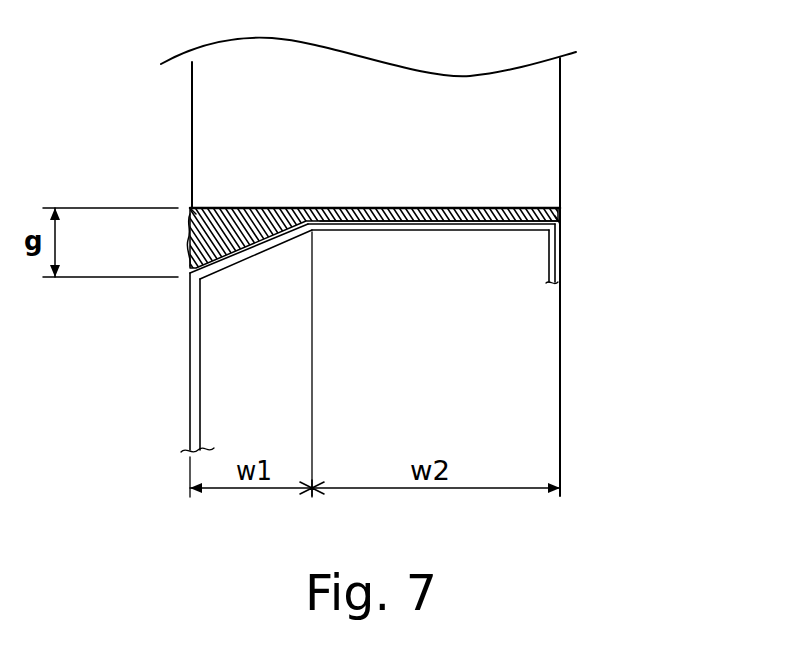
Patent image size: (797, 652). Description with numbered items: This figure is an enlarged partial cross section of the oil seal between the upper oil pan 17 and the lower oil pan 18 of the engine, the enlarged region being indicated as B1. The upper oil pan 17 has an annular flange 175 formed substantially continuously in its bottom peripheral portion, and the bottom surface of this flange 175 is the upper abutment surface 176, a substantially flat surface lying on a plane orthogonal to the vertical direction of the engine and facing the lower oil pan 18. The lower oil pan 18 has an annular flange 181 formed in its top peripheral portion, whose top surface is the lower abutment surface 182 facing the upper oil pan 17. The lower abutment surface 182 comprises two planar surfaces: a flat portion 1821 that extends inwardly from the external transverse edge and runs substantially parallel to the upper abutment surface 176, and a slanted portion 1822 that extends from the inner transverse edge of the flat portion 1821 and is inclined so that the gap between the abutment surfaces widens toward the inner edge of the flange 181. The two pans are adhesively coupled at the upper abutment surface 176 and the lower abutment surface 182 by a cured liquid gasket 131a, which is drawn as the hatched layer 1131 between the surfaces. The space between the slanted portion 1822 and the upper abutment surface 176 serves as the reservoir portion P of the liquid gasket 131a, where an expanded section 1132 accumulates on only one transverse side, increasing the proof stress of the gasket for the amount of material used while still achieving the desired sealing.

The upper oil pan 17 is at (560, 120).
The annular flange 175 is at (560, 185).
The upper abutment surface 176 is at (192, 210).
The expanded section 1132 is at (232, 208).
The adhesive layer 1131 is at (463, 208).
The liquid gasket 131a is at (190, 240).
The lower oil pan 18 is at (376, 327).
The lower abutment surface 182 is at (440, 224).
The flat portion 1821 is at (563, 212).
The slanted portion 1822 is at (190, 272).
The annular flange 181 is at (563, 235).
The reservoir portion P is at (170, 232).
The enlarged region B1 is at (652, 150).